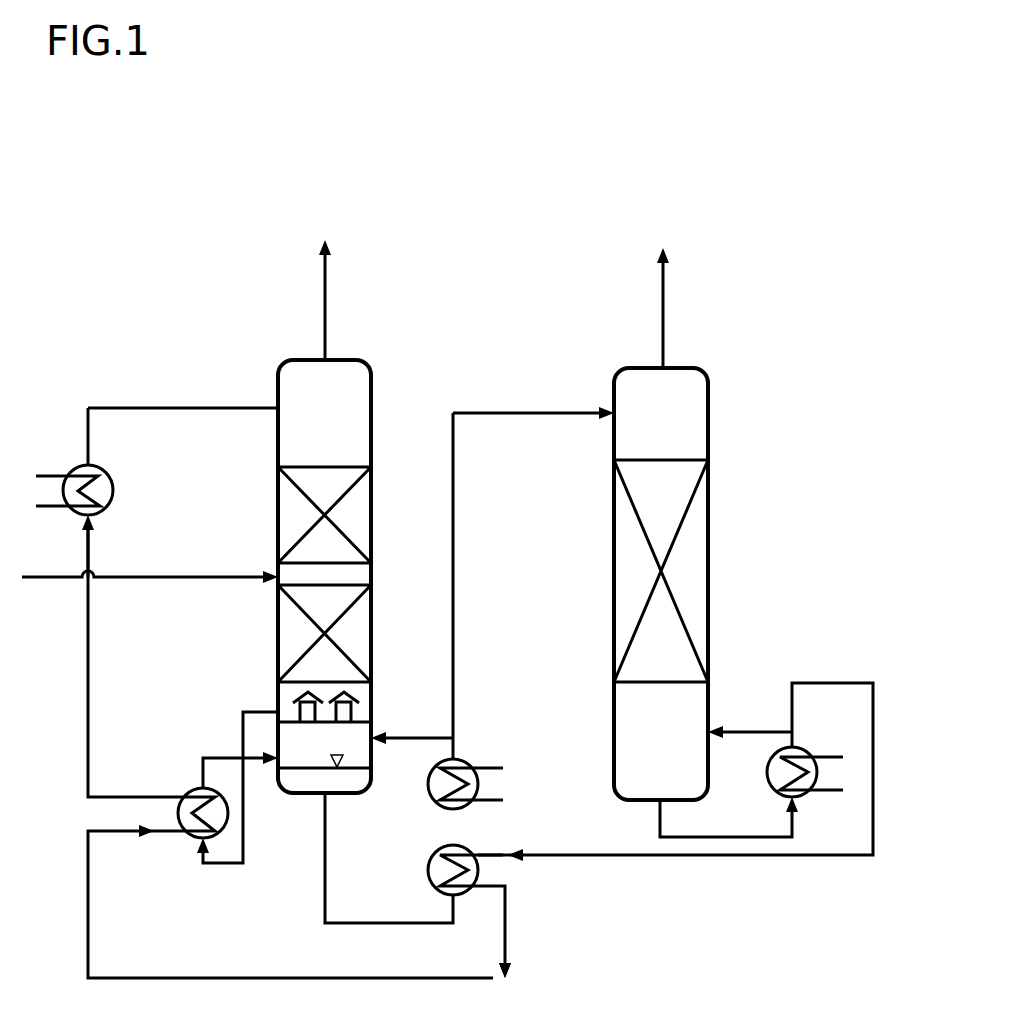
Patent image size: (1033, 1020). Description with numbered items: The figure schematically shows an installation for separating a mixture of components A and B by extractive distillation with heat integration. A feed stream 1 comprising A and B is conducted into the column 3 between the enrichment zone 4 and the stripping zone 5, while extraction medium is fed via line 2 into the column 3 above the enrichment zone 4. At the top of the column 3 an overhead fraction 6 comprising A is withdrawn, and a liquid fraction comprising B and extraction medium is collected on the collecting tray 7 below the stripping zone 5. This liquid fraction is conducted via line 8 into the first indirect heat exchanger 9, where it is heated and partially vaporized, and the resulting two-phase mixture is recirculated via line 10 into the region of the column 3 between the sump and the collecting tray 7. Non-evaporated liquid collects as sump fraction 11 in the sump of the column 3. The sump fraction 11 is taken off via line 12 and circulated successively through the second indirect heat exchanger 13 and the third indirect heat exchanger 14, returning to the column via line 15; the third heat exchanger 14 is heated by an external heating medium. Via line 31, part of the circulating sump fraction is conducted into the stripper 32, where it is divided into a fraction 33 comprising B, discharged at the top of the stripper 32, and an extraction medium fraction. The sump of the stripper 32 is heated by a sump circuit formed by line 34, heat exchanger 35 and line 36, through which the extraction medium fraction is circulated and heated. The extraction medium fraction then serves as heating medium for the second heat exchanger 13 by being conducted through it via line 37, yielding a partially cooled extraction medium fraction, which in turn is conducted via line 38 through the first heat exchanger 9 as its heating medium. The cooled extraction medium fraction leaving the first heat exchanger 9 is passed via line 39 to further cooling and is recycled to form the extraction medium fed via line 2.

The feed stream 1 is at (78, 577).
The line 2 is at (178, 408).
The column 3 is at (371, 407).
The enrichment zone 4 is at (357, 513).
The stripping zone 5 is at (352, 661).
The overhead fraction 6 is at (327, 298).
The collecting tray 7 is at (360, 722).
The line 8 is at (262, 706).
The first indirect heat exchanger 9 is at (187, 795).
The line 10 is at (230, 757).
The sump fraction 11 is at (300, 790).
The line 12 is at (325, 917).
The second indirect heat exchanger 13 is at (428, 870).
The third indirect heat exchanger 14 is at (458, 760).
The line 15 is at (412, 742).
The line 31 is at (530, 413).
The stripper 32 is at (710, 418).
The fraction comprising B 33 is at (665, 308).
The sump circuit line 34 is at (730, 837).
The heat exchanger 35 is at (805, 752).
The sump circuit line 36 is at (743, 732).
The line 37 is at (520, 855).
The line 38 is at (108, 835).
The line 39 is at (108, 797).